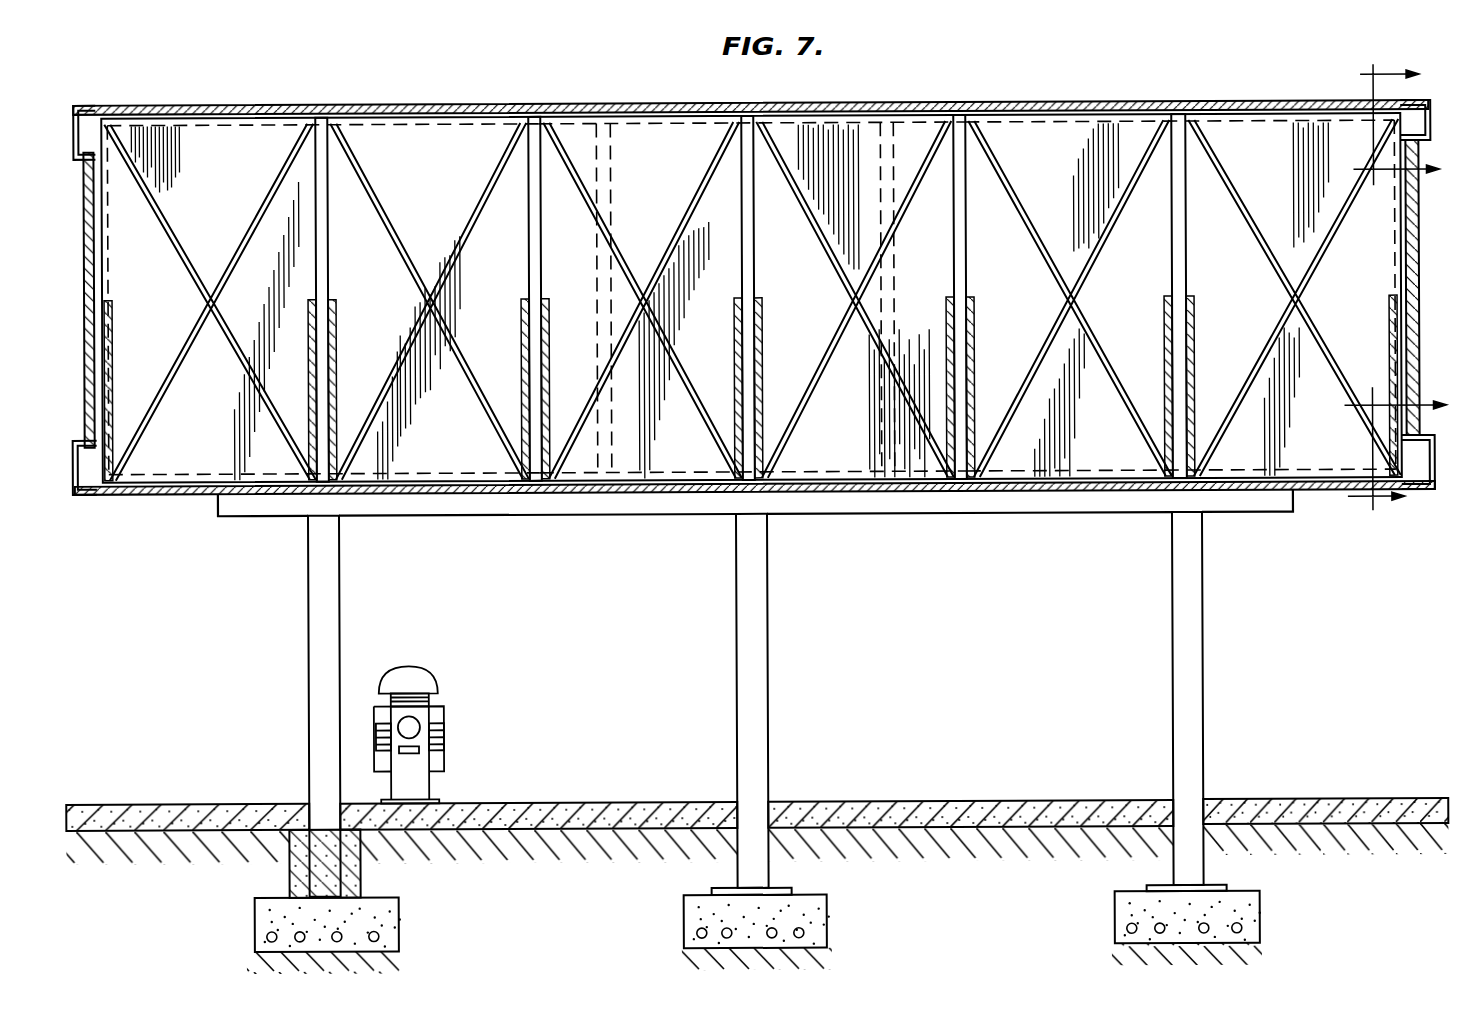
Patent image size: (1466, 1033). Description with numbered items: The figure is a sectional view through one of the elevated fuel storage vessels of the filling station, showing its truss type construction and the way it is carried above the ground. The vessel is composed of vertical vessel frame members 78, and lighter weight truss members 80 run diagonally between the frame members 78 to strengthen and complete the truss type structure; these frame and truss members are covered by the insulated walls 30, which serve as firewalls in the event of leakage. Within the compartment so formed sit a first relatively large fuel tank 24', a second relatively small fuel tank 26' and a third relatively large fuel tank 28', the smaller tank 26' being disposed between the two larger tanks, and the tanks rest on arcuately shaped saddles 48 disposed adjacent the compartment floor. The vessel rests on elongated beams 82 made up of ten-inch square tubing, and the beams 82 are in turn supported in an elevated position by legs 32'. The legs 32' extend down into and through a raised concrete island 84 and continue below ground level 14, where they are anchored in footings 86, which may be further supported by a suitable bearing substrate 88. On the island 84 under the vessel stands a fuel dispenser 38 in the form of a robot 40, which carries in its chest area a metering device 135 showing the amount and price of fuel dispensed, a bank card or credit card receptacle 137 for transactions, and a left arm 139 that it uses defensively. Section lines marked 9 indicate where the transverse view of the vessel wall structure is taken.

The walls 30 is at (205, 103).
The third relatively large fuel tank 28' is at (323, 268).
The second relatively small fuel tank 26' is at (752, 265).
The first relatively large fuel tank 24' is at (1180, 263).
The vessel frame members 78 is at (334, 274).
The saddles 48 is at (1170, 385).
The truss members 80 is at (478, 200).
The beams 82 is at (640, 503).
The legs 32' is at (713, 704).
The raised concrete islands 84 is at (158, 802).
The ground level 14 is at (108, 843).
The footings 86 is at (380, 912).
The bearing substrate 88 is at (1250, 957).
The fuel dispensers 38 is at (422, 735).
The metering device 135 is at (412, 720).
The left arm 139 is at (437, 748).
The bank card or gasoline credit card receptacle 137 is at (418, 752).
The robot 40 is at (408, 782).
The section line 9- 9 is at (1395, 289).